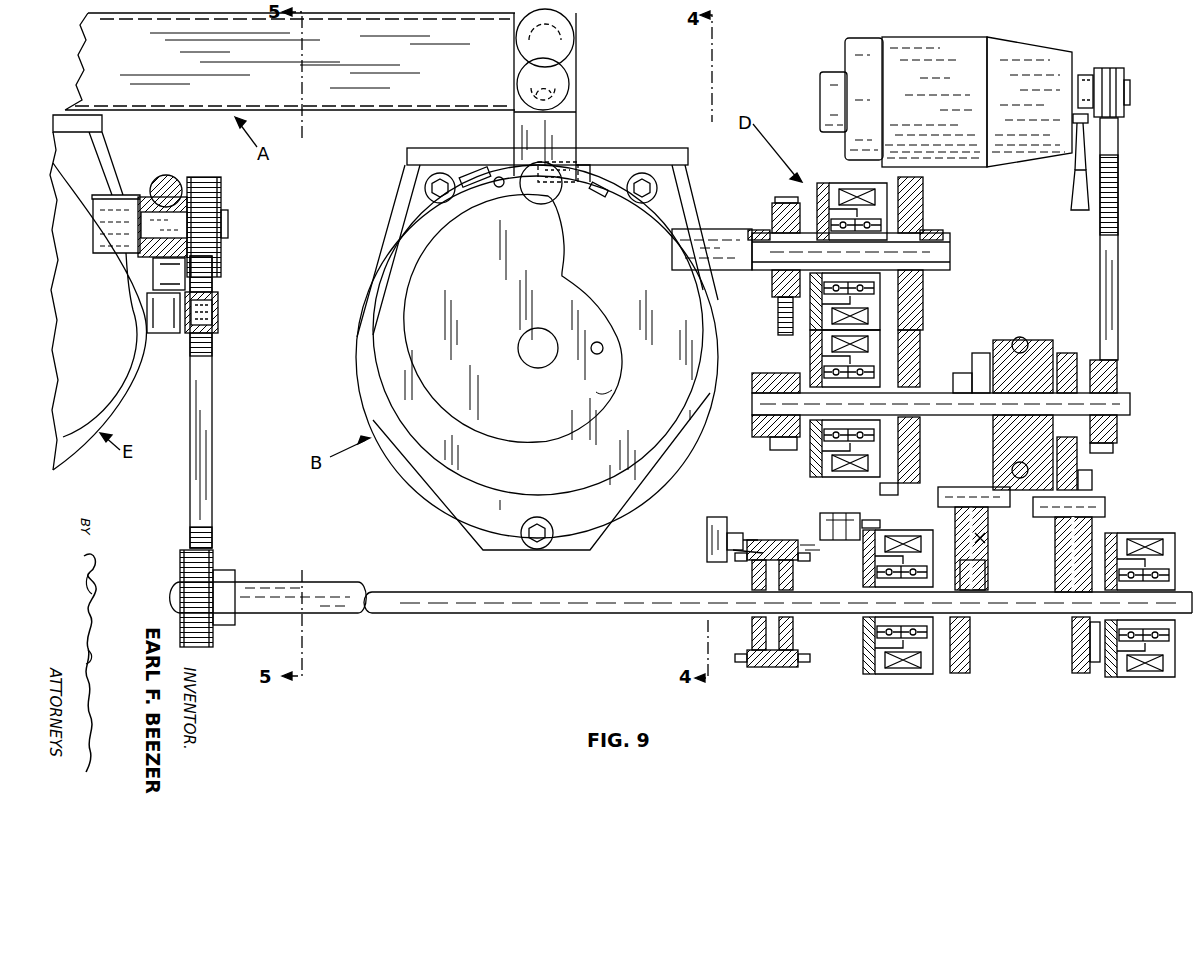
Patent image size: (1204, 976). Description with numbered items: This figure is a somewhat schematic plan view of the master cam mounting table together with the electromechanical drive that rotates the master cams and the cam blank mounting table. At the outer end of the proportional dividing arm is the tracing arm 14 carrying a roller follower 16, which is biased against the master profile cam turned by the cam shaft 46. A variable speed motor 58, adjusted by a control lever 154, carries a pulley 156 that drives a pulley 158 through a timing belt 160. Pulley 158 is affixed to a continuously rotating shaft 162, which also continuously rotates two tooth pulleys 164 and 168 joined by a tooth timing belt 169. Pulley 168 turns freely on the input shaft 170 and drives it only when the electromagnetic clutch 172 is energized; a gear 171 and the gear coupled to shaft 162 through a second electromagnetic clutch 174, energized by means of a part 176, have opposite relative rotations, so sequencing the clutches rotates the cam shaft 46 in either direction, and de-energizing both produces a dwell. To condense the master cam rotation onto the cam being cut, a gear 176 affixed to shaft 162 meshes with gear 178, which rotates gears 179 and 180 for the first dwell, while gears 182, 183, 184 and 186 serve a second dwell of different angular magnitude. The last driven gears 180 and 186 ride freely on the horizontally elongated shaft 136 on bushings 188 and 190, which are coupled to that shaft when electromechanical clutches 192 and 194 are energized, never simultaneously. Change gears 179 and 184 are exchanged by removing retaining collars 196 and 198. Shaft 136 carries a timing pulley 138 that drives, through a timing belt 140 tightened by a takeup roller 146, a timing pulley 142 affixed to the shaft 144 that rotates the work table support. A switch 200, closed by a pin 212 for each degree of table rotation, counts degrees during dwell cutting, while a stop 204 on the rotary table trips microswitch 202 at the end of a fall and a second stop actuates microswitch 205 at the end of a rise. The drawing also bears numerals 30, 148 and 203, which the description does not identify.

The tracing arm 14 is at (569, 121).
The roller follower 16 is at (518, 188).
The rollers 30 is at (579, 48).
The cam shaft 46 is at (513, 319).
The motor 58 is at (893, 56).
The horizontally elongated shaft 136 is at (398, 590).
The timing pulley 138 is at (215, 562).
The timing belt 140 is at (204, 398).
The timing pulley 142 is at (228, 228).
The shaft 144 is at (175, 222).
The takeup roller 146 is at (218, 312).
The bracket 148 is at (168, 320).
The control lever 154 is at (1072, 190).
The pulley 156 is at (1085, 75).
The pulley 158 is at (1092, 385).
The timing belt 160 is at (1120, 68).
The shaft 162 is at (1128, 413).
The tooth pulley 164 is at (752, 419).
The pulley 168 is at (772, 212).
The tooth timing belt 169 is at (772, 311).
The input shaft 170 is at (952, 252).
The gear 171 is at (916, 317).
The electromagnetic clutch 172 is at (838, 188).
The electromagnetic clutch 174 is at (830, 466).
The gear 176 is at (830, 396).
The gear 178 is at (1110, 452).
The change gear 179 is at (1097, 487).
The gear 180 is at (1074, 634).
The gear 182 is at (978, 366).
The gear 183 is at (985, 524).
The change gear 184 is at (976, 538).
The gear 186 is at (968, 563).
The bushing 188 is at (1098, 624).
The bushing 190 is at (946, 631).
The electromechanical clutch 192 is at (1130, 680).
The electromechanical clutch 194 is at (888, 666).
The retaining collar 196 is at (1108, 505).
The retaining collar 198 is at (946, 506).
The switch 200 is at (707, 526).
The microswitch 202 is at (483, 172).
The bracket 203 is at (597, 168).
The stop 204 is at (599, 186).
The microswitch 205 is at (568, 158).
The pin 212 is at (746, 663).